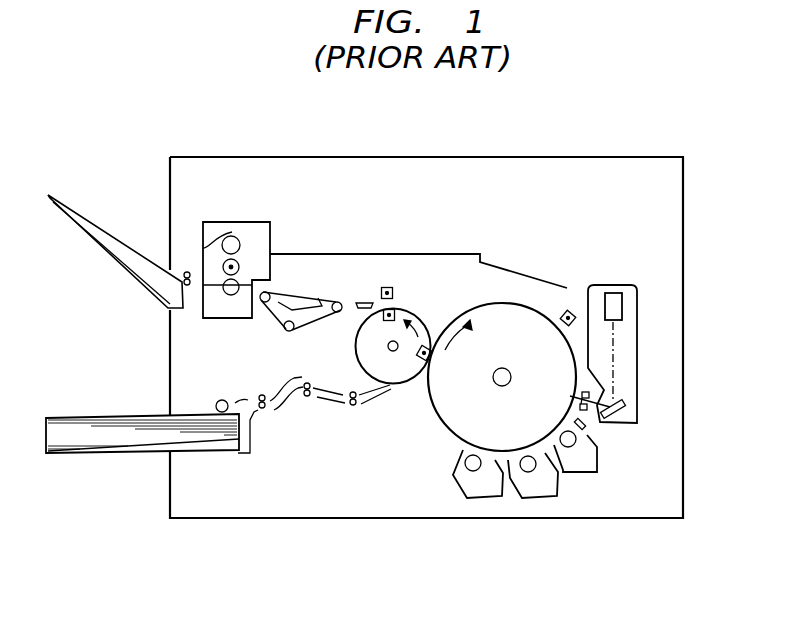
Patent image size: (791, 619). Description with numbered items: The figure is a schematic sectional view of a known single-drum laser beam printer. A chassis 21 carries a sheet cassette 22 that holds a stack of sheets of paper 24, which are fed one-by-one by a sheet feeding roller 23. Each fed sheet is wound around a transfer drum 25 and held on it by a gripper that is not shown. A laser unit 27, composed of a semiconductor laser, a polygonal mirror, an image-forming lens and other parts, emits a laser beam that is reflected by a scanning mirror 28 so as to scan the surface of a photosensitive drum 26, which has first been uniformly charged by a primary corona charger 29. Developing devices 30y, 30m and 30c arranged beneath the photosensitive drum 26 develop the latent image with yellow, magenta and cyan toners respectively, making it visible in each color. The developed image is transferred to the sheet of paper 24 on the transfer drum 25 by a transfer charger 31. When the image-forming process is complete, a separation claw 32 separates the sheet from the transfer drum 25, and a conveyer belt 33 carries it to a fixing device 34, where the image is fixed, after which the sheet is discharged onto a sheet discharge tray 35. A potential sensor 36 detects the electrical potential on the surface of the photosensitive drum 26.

The chassis 21 is at (684, 425).
The sheet cassette 22 is at (73, 417).
The sheet feeding roller 23 is at (220, 399).
The sheets of paper 24 is at (132, 428).
The transfer drum 25 is at (355, 350).
The photosensitive drum 26 is at (458, 316).
The laser unit 27 is at (611, 292).
The scanning mirror 28 is at (622, 426).
The primary corona charger 29 is at (573, 311).
The developing device 30c is at (457, 485).
The developing device 30m is at (537, 498).
The developing device 30y is at (585, 473).
The transfer charger 31 is at (423, 360).
The separation claw 32 is at (365, 300).
The conveyer belt 33 is at (313, 293).
The fixing device 34 is at (236, 222).
The sheet discharge tray 35 is at (88, 240).
The potential sensor 36 is at (583, 428).